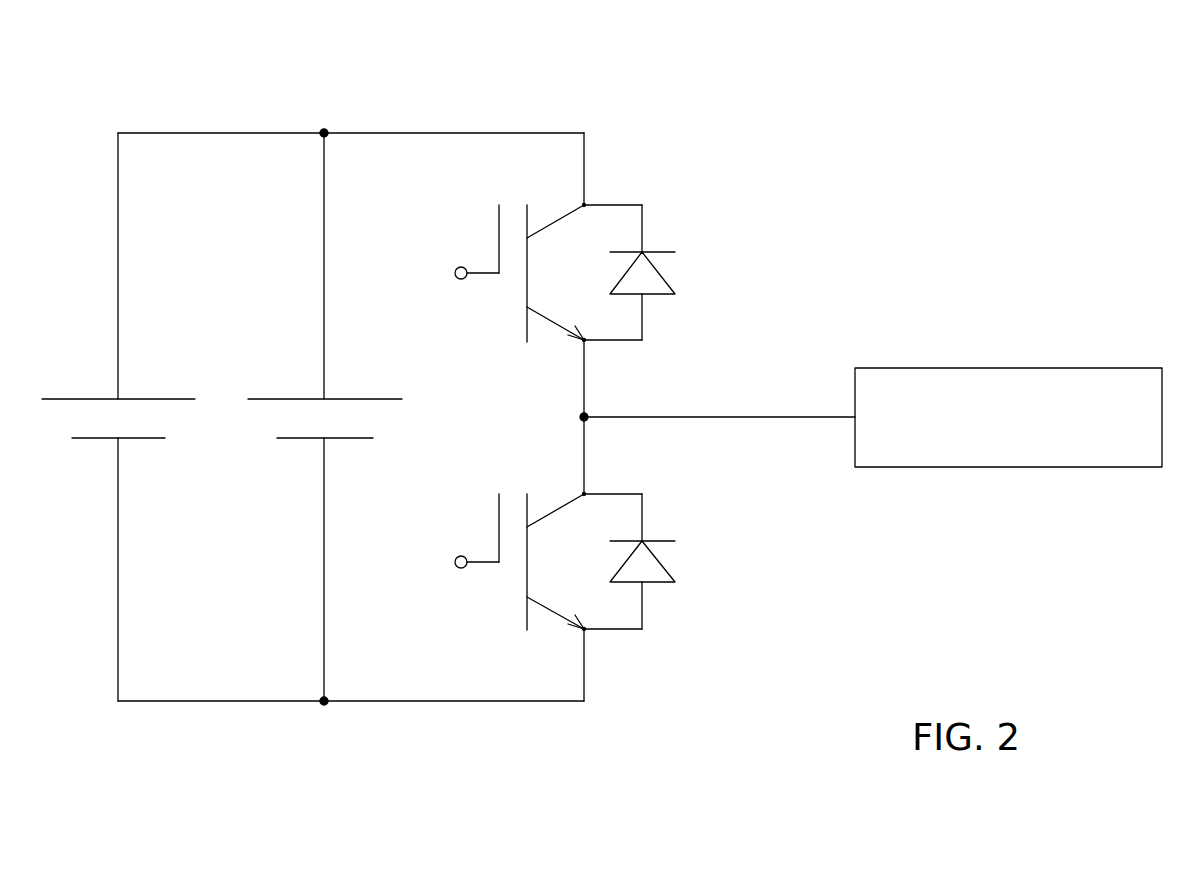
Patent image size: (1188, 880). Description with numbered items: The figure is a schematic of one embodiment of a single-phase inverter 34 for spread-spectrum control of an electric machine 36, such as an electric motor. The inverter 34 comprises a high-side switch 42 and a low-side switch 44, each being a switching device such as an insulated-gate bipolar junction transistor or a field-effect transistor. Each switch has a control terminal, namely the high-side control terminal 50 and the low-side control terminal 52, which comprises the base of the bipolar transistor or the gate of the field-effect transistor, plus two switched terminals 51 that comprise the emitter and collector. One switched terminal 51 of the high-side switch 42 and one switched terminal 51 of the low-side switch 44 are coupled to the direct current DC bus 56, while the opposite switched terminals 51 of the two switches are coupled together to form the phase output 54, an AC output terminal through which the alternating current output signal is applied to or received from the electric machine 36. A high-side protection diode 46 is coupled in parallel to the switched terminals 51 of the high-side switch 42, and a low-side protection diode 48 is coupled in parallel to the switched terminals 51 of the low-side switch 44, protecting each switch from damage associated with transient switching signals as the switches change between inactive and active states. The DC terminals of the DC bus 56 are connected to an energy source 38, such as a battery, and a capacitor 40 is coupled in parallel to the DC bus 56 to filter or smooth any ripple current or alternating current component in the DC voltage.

The inverter 34 is at (333, 756).
The electric machine 36 is at (1005, 368).
The energy source 38 is at (160, 398).
The capacitor 40 is at (367, 398).
The high-side switch 42 is at (556, 195).
The low-side switch 44 is at (553, 480).
The high-side protection diode 46 is at (655, 293).
The low-side protection diode 48 is at (655, 582).
The high-side control terminal 50 is at (458, 280).
The switched terminals 51 is at (585, 207).
The low-side control terminal 52 is at (458, 568).
The phase output 54 is at (582, 416).
The DC bus 56 is at (213, 133).